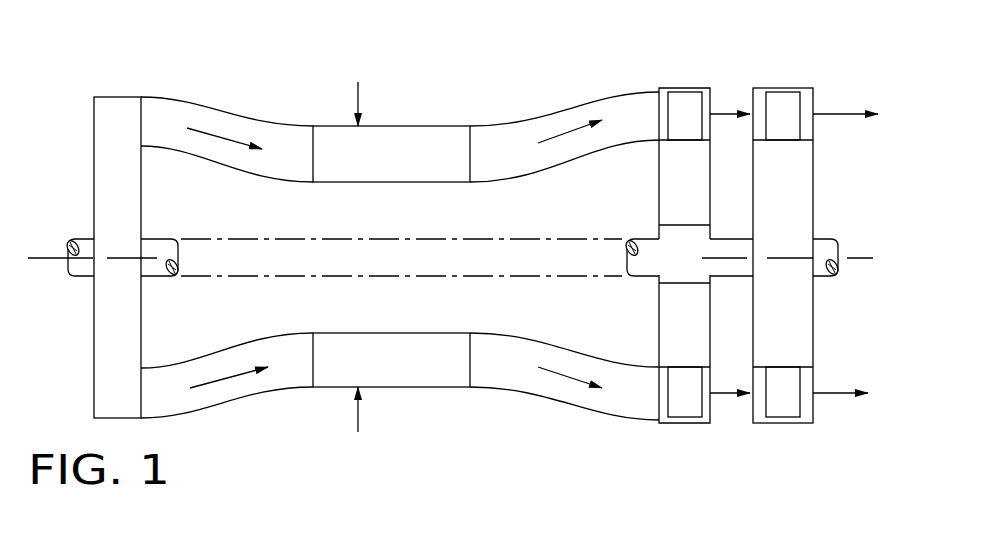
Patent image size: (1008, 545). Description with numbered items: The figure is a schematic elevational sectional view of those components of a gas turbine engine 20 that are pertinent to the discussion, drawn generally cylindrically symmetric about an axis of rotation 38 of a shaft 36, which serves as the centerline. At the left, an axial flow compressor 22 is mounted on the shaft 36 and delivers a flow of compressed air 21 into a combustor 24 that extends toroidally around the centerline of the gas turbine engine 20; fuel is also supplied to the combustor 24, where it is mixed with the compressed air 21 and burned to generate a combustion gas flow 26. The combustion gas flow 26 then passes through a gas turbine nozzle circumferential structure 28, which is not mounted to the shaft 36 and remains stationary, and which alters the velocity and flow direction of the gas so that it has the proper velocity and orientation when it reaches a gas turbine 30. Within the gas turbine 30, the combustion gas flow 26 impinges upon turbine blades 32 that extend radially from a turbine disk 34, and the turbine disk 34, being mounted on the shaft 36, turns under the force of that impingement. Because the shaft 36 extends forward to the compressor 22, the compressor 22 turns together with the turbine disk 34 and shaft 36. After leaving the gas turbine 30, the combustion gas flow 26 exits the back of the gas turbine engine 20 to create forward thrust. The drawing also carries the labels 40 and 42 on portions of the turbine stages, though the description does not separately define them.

The gas turbine engine 20 is at (148, 45).
The flow of compressed air 21 is at (218, 132).
The axial flow compressor 22 is at (94, 123).
The combustor 24 is at (396, 126).
The combustion gas flow 26 is at (560, 135).
The gas turbine nozzle circumferential structure 28 is at (641, 271).
The gas turbine 30 is at (817, 253).
The turbine blades 32 is at (780, 102).
The turbine disk 34 is at (815, 185).
The shaft 36 is at (160, 276).
The axis of rotation 38 is at (42, 258).
The turbine rotor 40 is at (676, 200).
The turbine blade row 42 is at (672, 397).